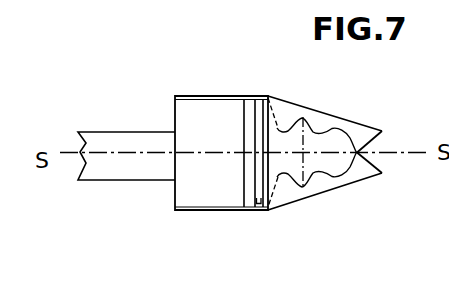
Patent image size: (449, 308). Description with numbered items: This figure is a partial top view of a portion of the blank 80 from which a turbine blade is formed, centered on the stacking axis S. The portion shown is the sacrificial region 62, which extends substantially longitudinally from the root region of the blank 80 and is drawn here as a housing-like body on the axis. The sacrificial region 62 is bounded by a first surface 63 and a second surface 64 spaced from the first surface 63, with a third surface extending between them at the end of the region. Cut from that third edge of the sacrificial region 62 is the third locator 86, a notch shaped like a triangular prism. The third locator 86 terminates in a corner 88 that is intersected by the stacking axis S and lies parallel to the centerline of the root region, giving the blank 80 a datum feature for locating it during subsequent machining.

The blank 80 is at (160, 115).
The sacrificial region 62 is at (285, 203).
The first surface 63 is at (312, 109).
The second surface 64 is at (331, 192).
The third locator 86 is at (372, 143).
The corner 88 is at (358, 175).